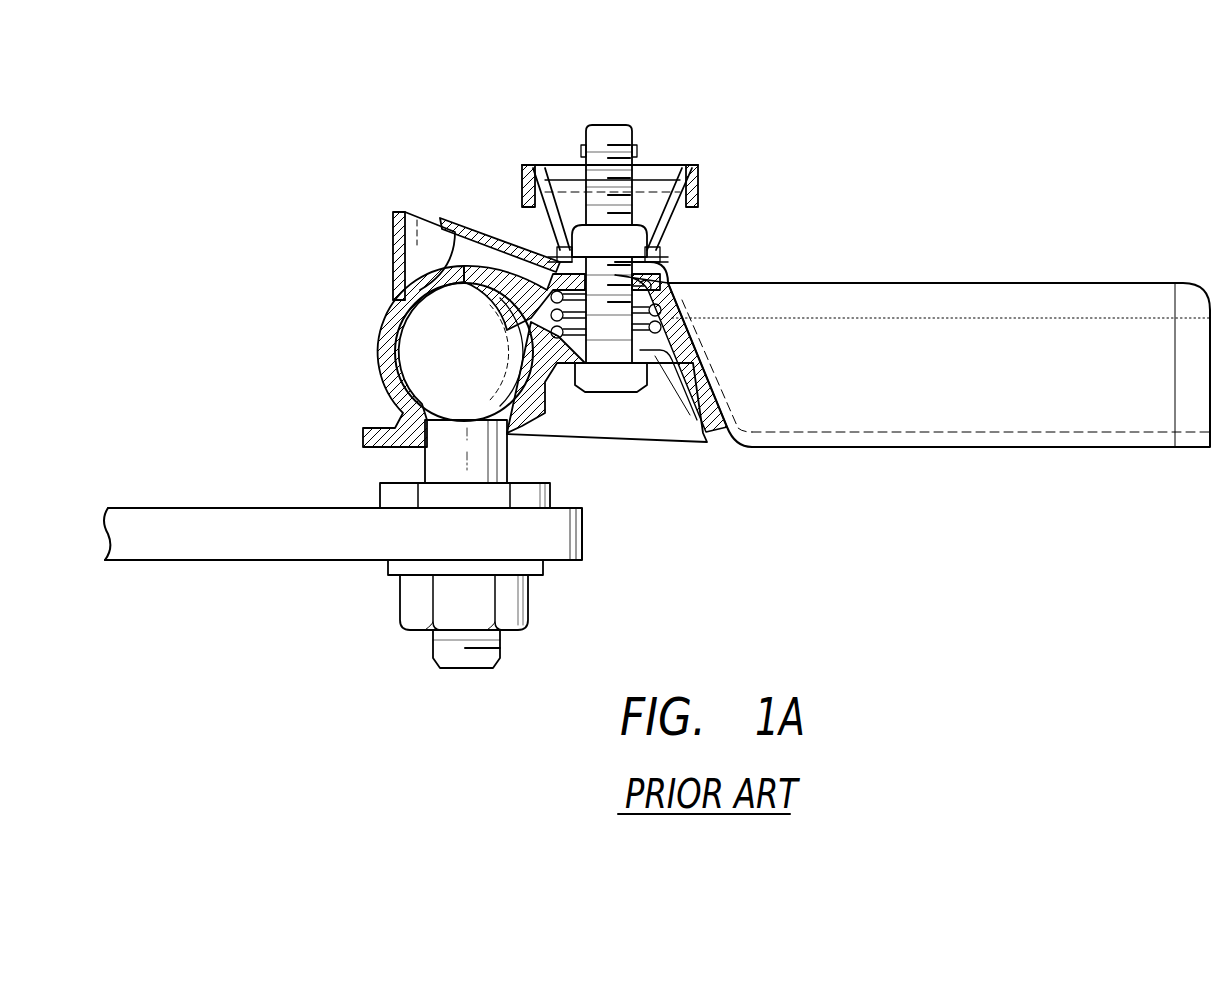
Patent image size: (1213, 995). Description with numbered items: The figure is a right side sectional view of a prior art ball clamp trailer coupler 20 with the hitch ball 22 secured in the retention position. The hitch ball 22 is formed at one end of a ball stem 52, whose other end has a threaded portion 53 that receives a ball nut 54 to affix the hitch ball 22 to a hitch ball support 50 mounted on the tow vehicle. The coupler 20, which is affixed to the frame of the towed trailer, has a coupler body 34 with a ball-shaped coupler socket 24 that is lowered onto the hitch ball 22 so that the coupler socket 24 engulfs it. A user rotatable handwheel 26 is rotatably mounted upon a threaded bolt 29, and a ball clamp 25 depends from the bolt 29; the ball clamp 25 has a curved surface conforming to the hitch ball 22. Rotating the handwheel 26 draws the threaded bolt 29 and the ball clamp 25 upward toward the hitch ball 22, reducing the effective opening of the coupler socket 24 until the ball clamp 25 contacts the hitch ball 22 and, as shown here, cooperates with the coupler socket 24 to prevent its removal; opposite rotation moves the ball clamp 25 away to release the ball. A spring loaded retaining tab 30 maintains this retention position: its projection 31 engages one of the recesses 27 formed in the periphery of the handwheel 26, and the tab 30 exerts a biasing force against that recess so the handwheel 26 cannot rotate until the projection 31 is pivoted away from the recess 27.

The coupler 20 is at (331, 319).
The hitch ball 22 is at (478, 372).
The coupler socket 24 is at (382, 387).
The ball clamp 25 is at (572, 408).
The handwheel 26 is at (657, 163).
The recesses 27 is at (567, 247).
The threaded bolt 29 is at (623, 373).
The retaining tab 30 is at (452, 233).
The projection 31 is at (527, 240).
The coupler body 34 is at (762, 283).
The hitch ball support 50 is at (145, 545).
The ball stem 52 is at (437, 465).
The threaded portion 53 is at (440, 653).
The ball nut 54 is at (518, 603).